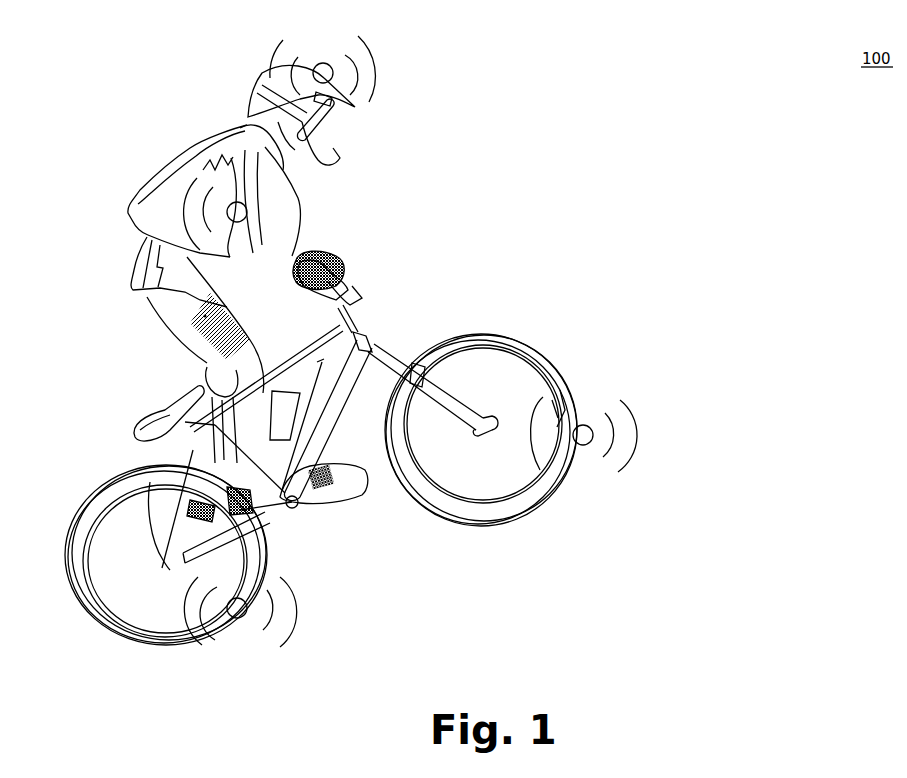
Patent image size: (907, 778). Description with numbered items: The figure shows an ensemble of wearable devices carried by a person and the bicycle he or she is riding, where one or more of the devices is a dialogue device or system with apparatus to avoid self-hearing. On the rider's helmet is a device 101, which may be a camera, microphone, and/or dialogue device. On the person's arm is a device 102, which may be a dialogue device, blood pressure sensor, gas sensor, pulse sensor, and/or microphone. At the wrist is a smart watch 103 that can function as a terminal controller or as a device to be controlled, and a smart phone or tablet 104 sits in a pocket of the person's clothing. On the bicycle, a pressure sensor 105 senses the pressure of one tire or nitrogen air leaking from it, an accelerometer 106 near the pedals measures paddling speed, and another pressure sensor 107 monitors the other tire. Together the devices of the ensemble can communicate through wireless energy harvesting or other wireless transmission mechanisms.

The device on a helmet 101 is at (380, 77).
The device on the person's arm 102 is at (268, 203).
The smart watch 103 is at (359, 270).
The smart phone and/or tablet 104 is at (265, 335).
The pressure sensor 105 is at (636, 441).
The accelerometer 106 is at (249, 512).
The pressure sensor for the other tire 107 is at (293, 612).